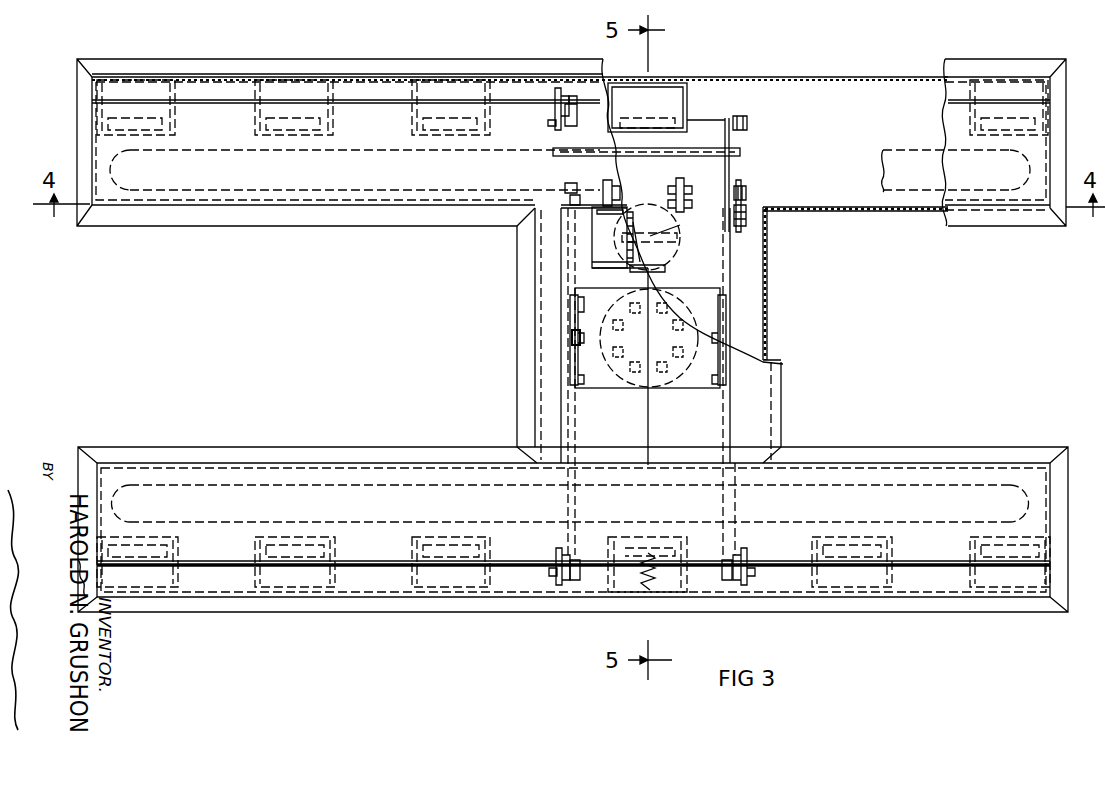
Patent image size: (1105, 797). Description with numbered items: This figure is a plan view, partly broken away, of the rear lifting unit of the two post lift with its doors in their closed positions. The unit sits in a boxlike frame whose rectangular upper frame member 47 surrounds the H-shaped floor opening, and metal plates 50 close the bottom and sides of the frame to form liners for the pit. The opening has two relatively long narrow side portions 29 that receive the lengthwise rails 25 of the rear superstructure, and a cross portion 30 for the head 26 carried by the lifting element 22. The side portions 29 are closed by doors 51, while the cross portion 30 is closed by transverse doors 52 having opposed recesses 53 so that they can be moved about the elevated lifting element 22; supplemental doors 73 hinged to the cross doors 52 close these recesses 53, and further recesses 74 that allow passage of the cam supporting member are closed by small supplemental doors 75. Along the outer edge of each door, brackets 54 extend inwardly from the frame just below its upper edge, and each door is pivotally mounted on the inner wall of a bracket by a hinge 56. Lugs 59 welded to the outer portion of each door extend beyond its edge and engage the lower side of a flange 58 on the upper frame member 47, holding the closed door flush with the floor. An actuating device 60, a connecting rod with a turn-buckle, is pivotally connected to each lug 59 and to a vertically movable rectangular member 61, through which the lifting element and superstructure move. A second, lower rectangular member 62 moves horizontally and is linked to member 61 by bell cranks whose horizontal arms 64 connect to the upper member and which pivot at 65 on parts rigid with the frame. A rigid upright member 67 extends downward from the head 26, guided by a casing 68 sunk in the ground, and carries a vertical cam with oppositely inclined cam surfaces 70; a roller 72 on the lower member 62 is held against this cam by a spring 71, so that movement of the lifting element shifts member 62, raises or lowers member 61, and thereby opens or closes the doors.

The lifting element 22 is at (620, 384).
The rails 25 is at (918, 153).
The head 26 is at (732, 226).
The side portions 29 is at (1050, 123).
The cross portion 30 is at (766, 328).
The upper frame member 47 is at (565, 70).
The metal plates 50 is at (848, 76).
The doors 51 is at (450, 200).
The transverse doors 52 is at (576, 424).
The recesses 53 is at (708, 386).
The brackets 54 is at (455, 80).
The hinge 56 is at (425, 126).
The flange 58 is at (955, 93).
The lugs 59 is at (555, 116).
The actuating device 60 is at (598, 126).
The vertically movable member 61 is at (720, 127).
The second member 62 is at (703, 150).
The horizontal arms 64 is at (746, 212).
The pivot 65 is at (746, 190).
The upright member 67 is at (668, 246).
The casing 68 is at (666, 268).
The cam surfaces 70 is at (676, 229).
The spring 71 is at (655, 590).
The roller 72 is at (690, 209).
The supplemental doors 73 is at (585, 381).
The recesses 74 is at (592, 262).
The small supplemental doors 75 is at (592, 232).